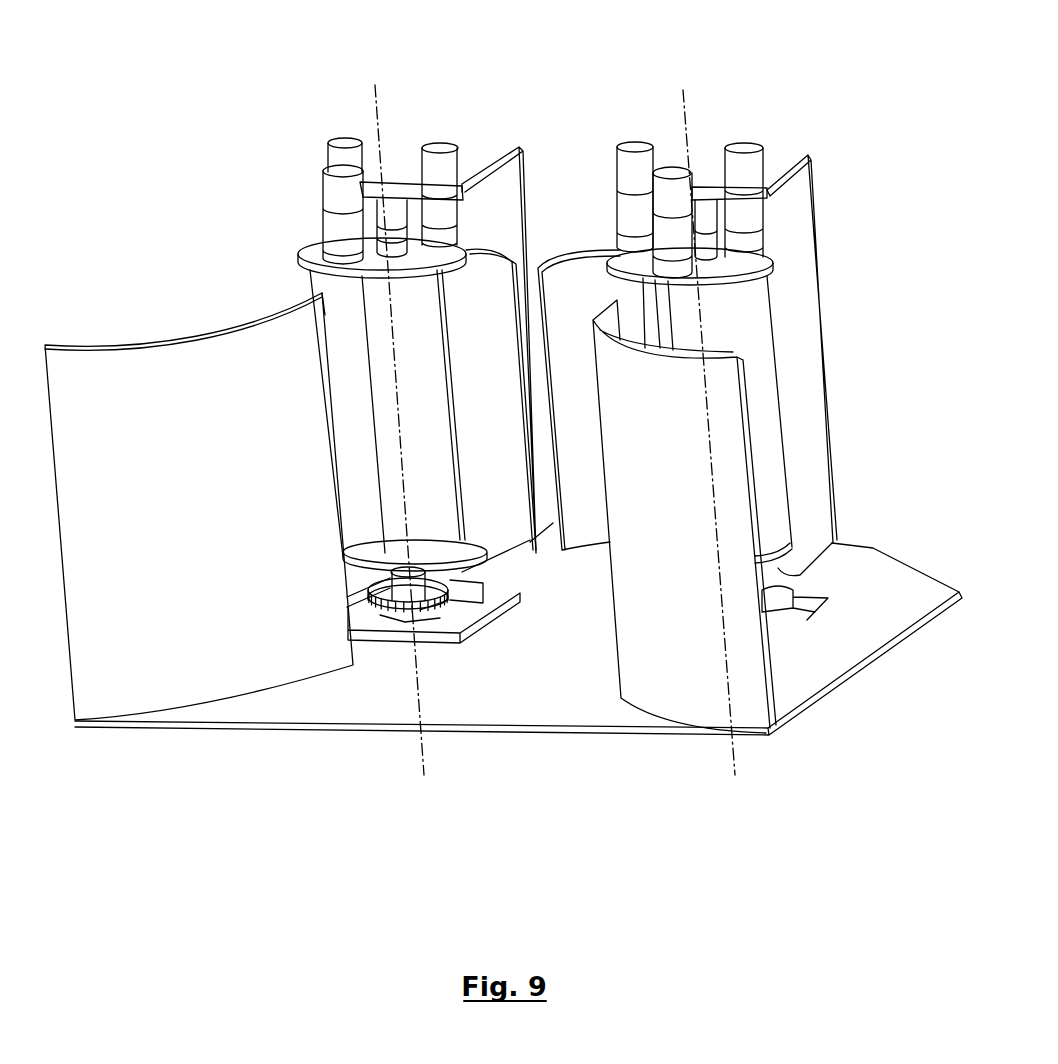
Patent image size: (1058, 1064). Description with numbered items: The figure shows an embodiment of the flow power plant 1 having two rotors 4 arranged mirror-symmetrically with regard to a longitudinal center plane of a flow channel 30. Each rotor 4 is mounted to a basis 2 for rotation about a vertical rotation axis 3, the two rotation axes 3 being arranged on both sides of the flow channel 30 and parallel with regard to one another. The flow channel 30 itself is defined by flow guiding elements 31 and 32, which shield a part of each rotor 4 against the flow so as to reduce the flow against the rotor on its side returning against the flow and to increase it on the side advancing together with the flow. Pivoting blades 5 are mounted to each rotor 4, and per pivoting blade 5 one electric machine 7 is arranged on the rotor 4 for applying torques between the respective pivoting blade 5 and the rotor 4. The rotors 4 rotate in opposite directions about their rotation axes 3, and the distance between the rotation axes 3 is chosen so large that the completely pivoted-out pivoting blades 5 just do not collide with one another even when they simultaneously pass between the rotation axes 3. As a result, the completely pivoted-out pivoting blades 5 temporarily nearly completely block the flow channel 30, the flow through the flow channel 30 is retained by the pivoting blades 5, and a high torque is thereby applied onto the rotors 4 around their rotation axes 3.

The flow power plant 1 is at (200, 142).
The basis 2 is at (849, 638).
The rotation axis 3 is at (688, 147).
The rotor 4 is at (712, 178).
The pivoting blade 5 is at (578, 488).
The electric machine 7 is at (743, 166).
The flow channel 30 is at (495, 663).
The flow guiding element 31 is at (142, 669).
The flow guiding element 32 is at (697, 862).